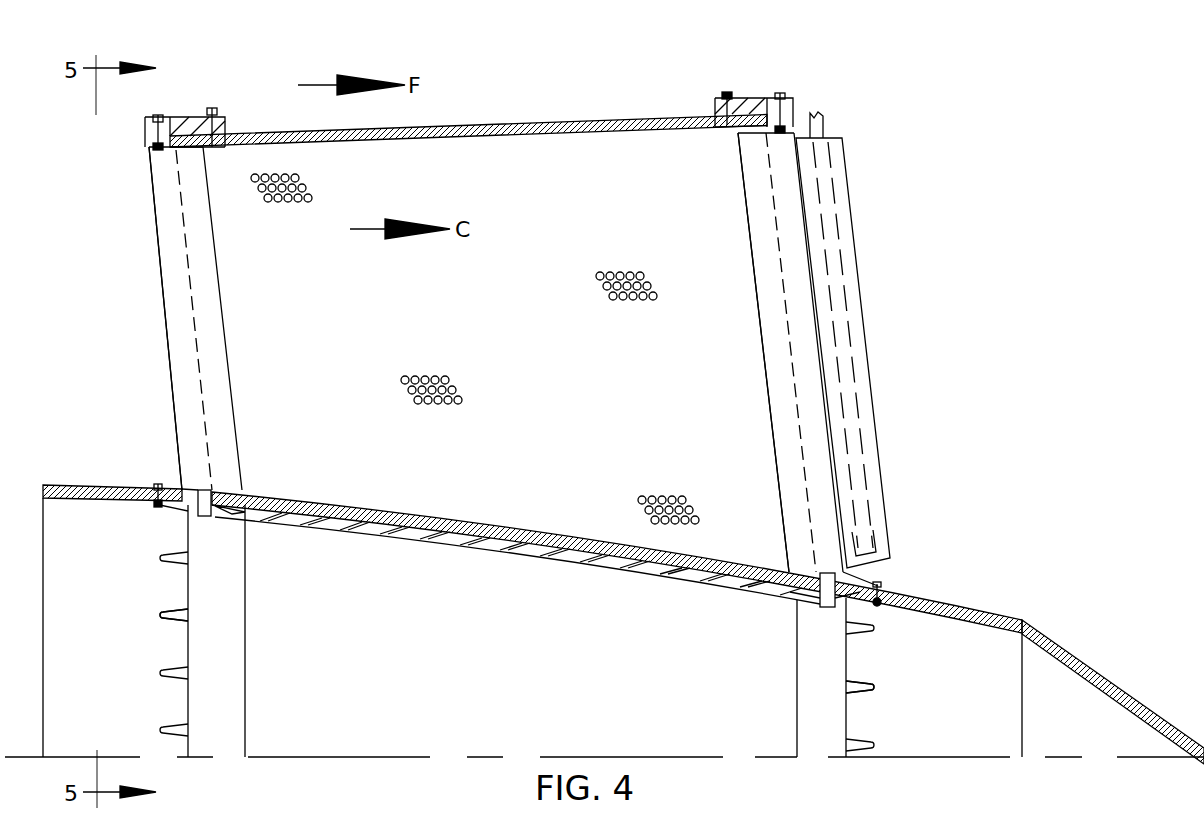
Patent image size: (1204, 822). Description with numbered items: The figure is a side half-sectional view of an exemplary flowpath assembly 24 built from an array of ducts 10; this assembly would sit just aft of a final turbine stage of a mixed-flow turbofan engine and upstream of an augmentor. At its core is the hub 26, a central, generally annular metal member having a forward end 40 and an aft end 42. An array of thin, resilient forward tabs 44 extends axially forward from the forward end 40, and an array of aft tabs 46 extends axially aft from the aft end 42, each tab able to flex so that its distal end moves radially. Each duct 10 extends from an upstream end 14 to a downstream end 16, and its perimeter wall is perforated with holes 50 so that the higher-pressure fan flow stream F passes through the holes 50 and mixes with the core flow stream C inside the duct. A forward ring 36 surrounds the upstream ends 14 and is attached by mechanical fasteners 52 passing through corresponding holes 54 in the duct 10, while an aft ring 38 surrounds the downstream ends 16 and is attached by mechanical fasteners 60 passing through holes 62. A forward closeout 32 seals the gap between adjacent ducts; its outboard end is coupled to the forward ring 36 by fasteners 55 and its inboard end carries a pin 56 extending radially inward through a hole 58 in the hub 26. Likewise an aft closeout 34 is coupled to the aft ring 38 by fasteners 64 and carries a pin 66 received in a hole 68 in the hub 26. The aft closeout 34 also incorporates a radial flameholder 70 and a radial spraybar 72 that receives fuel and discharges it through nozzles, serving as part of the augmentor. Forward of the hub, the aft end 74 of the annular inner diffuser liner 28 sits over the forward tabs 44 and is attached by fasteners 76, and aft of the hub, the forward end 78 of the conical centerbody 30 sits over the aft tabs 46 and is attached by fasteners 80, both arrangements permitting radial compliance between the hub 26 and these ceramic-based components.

The duct 10 is at (492, 100).
The upstream end 14 is at (183, 290).
The downstream end 16 is at (780, 356).
The flowpath assembly 24 is at (672, 28).
The hub 26 is at (505, 554).
The inner diffuser liner 28 is at (75, 486).
The centerbody 30 is at (1065, 655).
The forward closeout 32 is at (150, 215).
The aft closeout 34 is at (745, 197).
The forward ring 36 is at (185, 122).
The aft ring 38 is at (760, 100).
The forward end 40 is at (185, 590).
The aft end 42 is at (848, 662).
The forward tabs 44 is at (178, 622).
The aft tabs 46 is at (855, 690).
The holes 50 is at (305, 188).
The mechanical fasteners 52 is at (212, 108).
The holes 54 is at (226, 147).
The fasteners 55 is at (157, 112).
The pins 56 is at (204, 516).
The holes 58 is at (222, 513).
The mechanical fasteners 60 is at (727, 92).
The holes 62 is at (728, 128).
The fasteners 64 is at (783, 96).
The pins 66 is at (830, 606).
The holes 68 is at (806, 598).
The radial flameholder 70 is at (855, 300).
The radial spraybar 72 is at (818, 120).
The aft end 74 is at (178, 490).
The fasteners 76 is at (158, 484).
The forward end 78 is at (858, 575).
The fasteners 80 is at (880, 600).